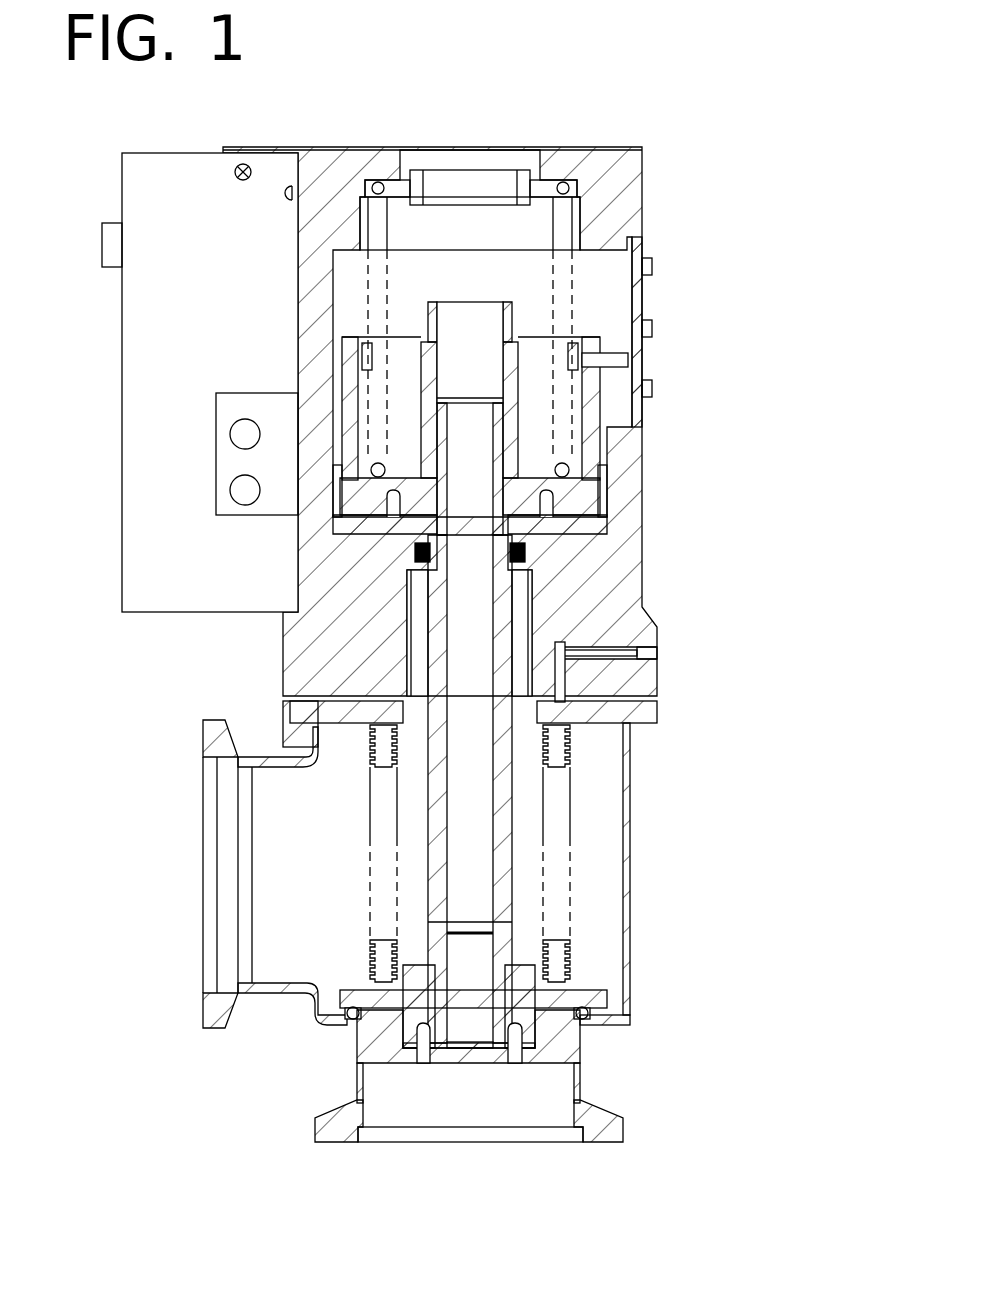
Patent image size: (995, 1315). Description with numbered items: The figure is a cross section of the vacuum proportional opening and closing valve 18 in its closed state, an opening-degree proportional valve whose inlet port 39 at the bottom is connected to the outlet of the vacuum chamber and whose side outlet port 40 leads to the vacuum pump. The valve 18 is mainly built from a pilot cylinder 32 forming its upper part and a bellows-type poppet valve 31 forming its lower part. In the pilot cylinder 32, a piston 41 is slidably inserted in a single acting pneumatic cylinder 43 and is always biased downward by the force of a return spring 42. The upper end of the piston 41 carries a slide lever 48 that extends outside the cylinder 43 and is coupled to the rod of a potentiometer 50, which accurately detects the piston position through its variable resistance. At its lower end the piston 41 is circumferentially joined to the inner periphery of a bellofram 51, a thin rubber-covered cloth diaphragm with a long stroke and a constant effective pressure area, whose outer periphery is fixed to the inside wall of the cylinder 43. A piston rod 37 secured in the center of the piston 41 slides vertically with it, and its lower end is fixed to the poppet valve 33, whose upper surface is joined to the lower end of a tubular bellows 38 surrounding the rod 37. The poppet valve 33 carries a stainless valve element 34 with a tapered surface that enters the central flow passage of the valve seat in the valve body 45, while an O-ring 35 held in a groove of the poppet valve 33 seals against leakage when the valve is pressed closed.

The vacuum proportional opening and closing valve 18 is at (503, 132).
The potentiometer 50 is at (147, 185).
The return spring 42 is at (375, 219).
The slide lever 48 is at (340, 358).
The pilot cylinder 32 is at (780, 142).
The single acting pneumatic cylinder 43 is at (627, 437).
The piston 41 is at (640, 478).
The bellofram 51 is at (640, 500).
The tubular bellows 38 is at (567, 763).
The valve body 45 is at (620, 860).
The bellows-type poppet valve 31 is at (780, 522).
The piston rod 37 is at (507, 918).
The poppet valve 33 is at (590, 1012).
The outlet port 40 is at (280, 990).
The stainless valve element 34 is at (370, 1045).
The O-ring 35 is at (583, 1028).
The inlet port 39 is at (370, 1117).